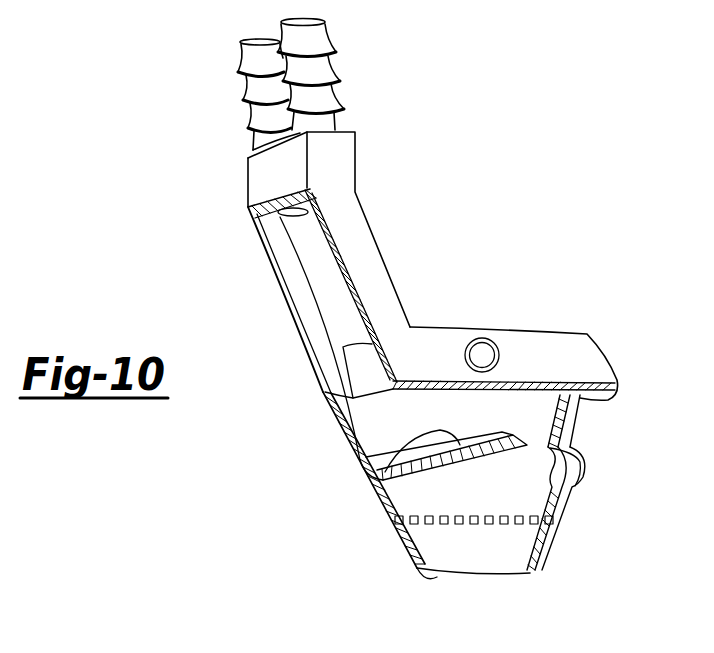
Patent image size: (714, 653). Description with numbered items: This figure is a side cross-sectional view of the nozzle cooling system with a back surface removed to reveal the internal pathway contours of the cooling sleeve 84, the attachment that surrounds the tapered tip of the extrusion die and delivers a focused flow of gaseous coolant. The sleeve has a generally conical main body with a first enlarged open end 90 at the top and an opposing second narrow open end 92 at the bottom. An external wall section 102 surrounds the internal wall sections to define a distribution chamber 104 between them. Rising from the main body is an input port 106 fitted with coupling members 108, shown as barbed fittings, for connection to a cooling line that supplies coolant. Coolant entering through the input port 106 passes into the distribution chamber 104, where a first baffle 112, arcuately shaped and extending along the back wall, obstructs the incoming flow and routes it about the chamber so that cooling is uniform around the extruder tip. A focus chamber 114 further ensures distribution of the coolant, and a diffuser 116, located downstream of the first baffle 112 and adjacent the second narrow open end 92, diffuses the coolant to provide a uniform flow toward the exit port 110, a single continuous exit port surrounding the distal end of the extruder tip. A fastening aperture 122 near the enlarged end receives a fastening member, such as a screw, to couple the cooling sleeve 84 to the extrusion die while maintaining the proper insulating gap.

The cooling sleeve 84 is at (498, 203).
The first enlarged open end 90 is at (557, 343).
The second narrow open end 92 is at (492, 577).
The external wall section 102 is at (340, 430).
The distribution chamber 104 is at (530, 410).
The input port 106 is at (362, 236).
The coupling member 108 is at (322, 90).
The exit port 110 is at (437, 577).
The first baffle 112 is at (418, 445).
The focus chamber 114 is at (528, 482).
The diffuser 116 is at (530, 518).
The fastening aperture 122 is at (482, 355).